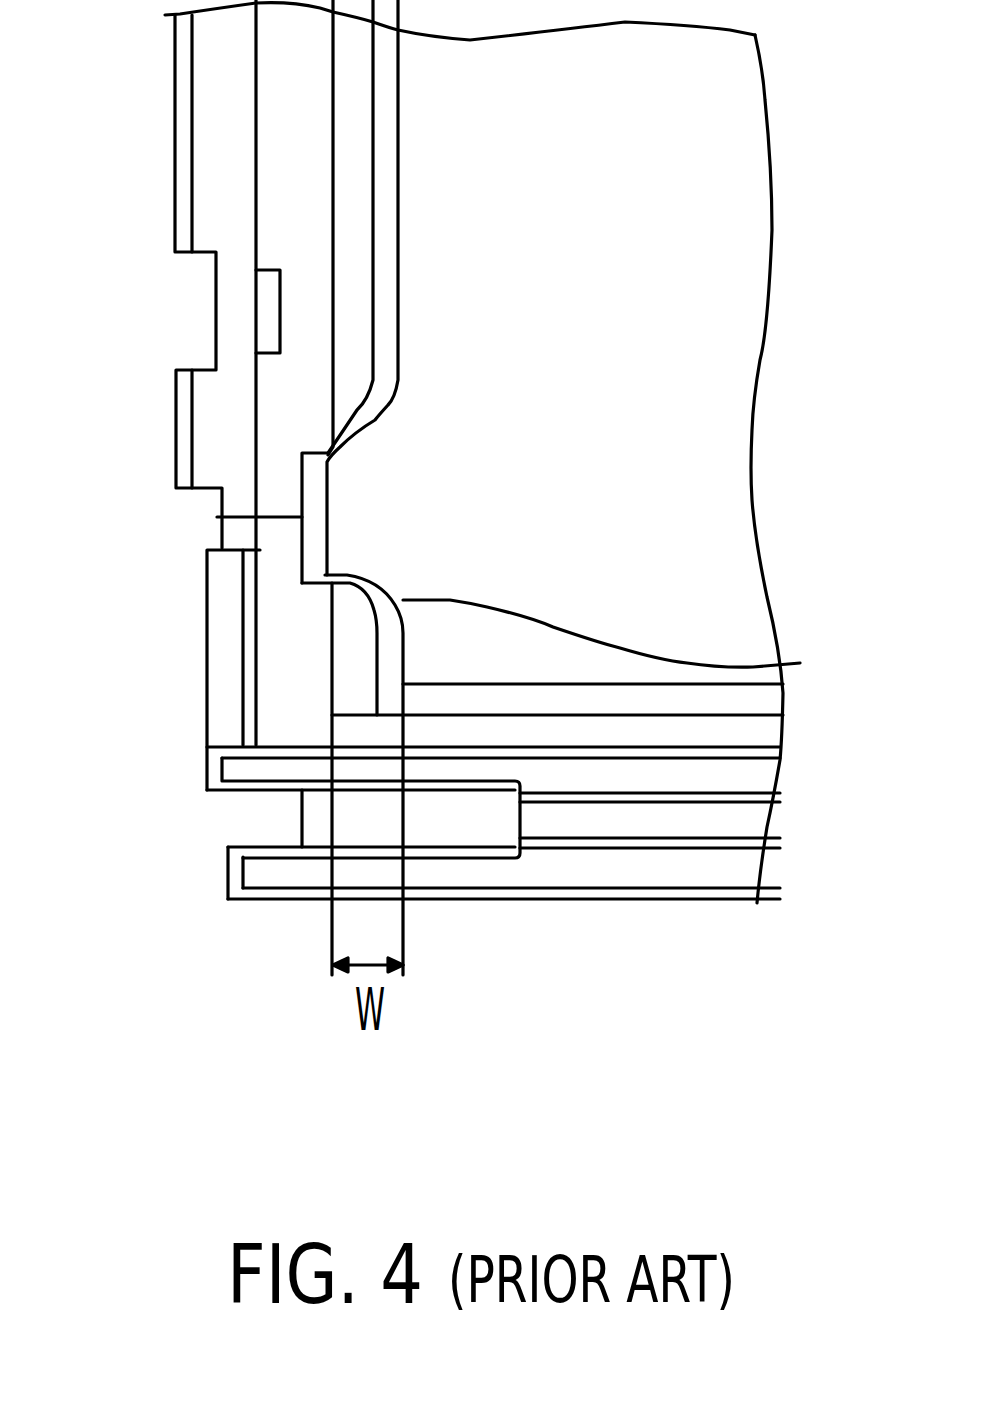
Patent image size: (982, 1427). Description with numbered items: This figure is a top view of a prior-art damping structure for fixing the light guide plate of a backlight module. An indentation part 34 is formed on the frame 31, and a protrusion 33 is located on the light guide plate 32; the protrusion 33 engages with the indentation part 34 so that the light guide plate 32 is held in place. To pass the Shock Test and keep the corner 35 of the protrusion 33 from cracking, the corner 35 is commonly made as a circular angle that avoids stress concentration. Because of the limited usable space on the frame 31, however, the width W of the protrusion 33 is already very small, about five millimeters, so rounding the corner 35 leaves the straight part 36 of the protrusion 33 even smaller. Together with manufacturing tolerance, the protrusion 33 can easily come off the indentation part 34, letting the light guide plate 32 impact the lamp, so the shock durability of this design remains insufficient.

The frame 31 is at (207, 157).
The light guide plate 32 is at (705, 255).
The protrusion 33 is at (345, 517).
The indentation part 34 is at (230, 517).
The corner 35 is at (375, 420).
The straight part 36 is at (343, 575).